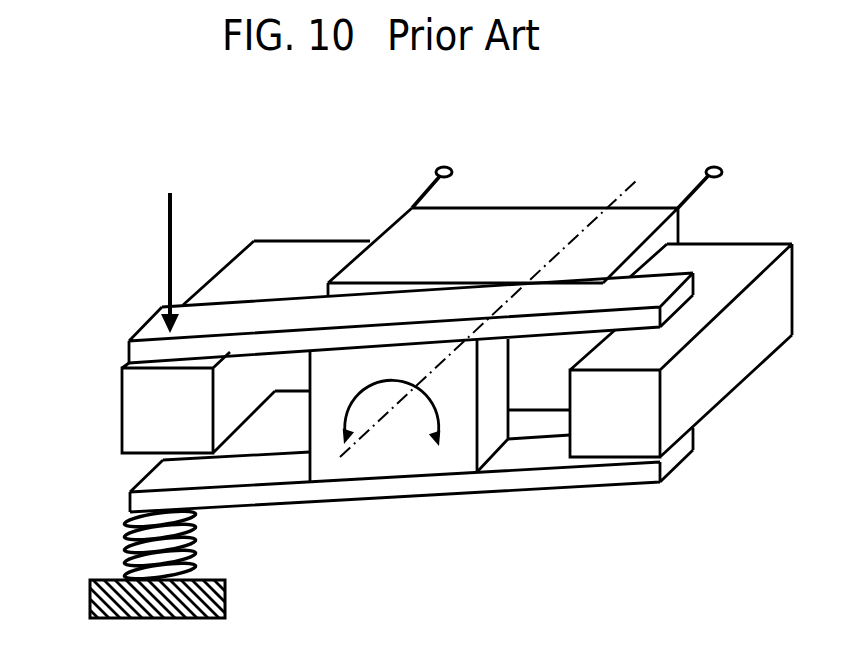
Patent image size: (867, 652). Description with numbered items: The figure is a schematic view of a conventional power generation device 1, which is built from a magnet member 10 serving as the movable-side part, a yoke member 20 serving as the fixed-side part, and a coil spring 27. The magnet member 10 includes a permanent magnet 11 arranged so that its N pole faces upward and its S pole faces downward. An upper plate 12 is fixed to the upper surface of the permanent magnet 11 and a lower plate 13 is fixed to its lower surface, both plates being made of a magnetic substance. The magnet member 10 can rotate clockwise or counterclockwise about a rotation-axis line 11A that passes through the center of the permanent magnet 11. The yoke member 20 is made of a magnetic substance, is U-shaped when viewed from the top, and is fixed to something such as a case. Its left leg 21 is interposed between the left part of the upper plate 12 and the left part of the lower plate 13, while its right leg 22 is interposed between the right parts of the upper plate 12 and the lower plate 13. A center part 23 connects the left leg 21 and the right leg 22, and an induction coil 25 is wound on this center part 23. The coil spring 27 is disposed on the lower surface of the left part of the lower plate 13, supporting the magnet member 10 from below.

The power generation device 1 is at (655, 162).
The magnet member 10 is at (411, 485).
The permanent magnet 11 is at (444, 450).
The rotation-axis line 11A is at (366, 435).
The upper plate 12 is at (515, 336).
The lower plate 13 is at (600, 470).
The yoke member 20 is at (411, 318).
The left leg 21 is at (137, 403).
The right leg 22 is at (723, 368).
The center part 23 is at (293, 257).
The induction coil 25 is at (510, 228).
The coil spring 27 is at (123, 528).